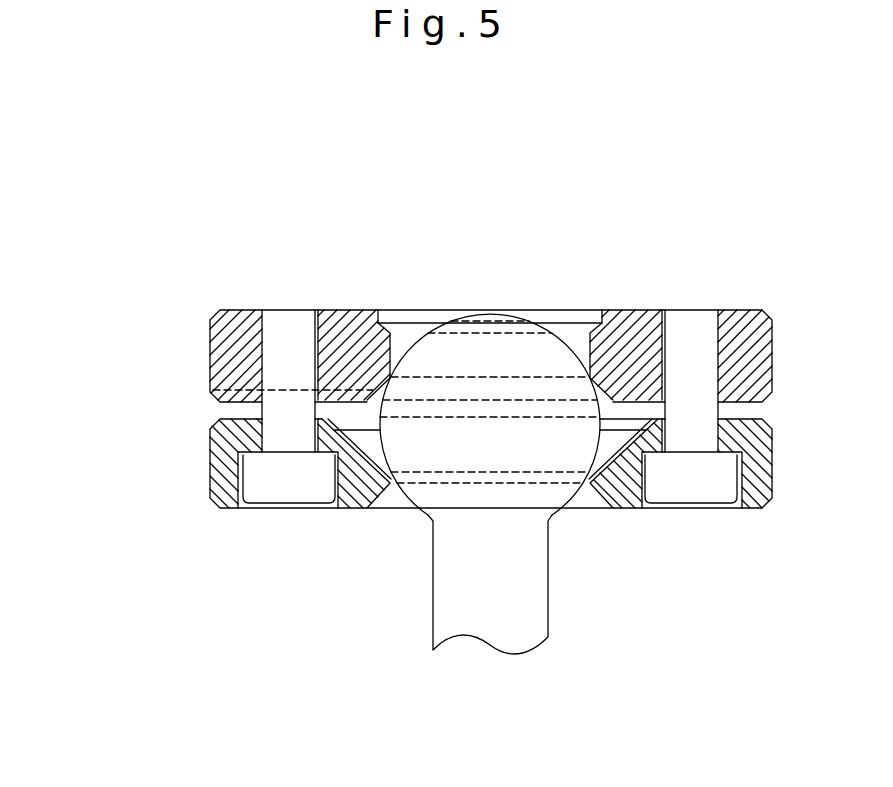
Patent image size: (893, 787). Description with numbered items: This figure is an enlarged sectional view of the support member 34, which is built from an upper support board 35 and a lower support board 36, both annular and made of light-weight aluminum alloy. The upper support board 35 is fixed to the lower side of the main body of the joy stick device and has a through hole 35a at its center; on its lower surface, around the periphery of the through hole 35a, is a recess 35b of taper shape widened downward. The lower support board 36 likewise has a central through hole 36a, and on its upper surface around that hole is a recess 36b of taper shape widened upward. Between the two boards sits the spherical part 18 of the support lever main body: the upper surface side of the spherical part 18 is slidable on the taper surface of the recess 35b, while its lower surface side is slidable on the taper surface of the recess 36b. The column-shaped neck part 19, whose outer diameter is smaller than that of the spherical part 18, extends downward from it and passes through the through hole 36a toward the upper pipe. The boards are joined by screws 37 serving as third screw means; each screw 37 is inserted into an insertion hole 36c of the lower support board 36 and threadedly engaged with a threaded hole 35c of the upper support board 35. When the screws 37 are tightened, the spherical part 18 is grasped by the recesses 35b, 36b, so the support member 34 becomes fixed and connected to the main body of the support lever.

The spherical part 18 is at (557, 493).
The neck part 19 is at (480, 612).
The support member 34 is at (108, 366).
The upper support board 35 is at (213, 353).
The through hole 35a is at (400, 340).
The recess 35b is at (607, 390).
The threaded holes 35c is at (313, 333).
The lower support board 36 is at (213, 470).
The through hole 36a is at (389, 485).
The recess 36b is at (613, 433).
The insertion holes 36c is at (317, 433).
The screws 37 is at (262, 490).